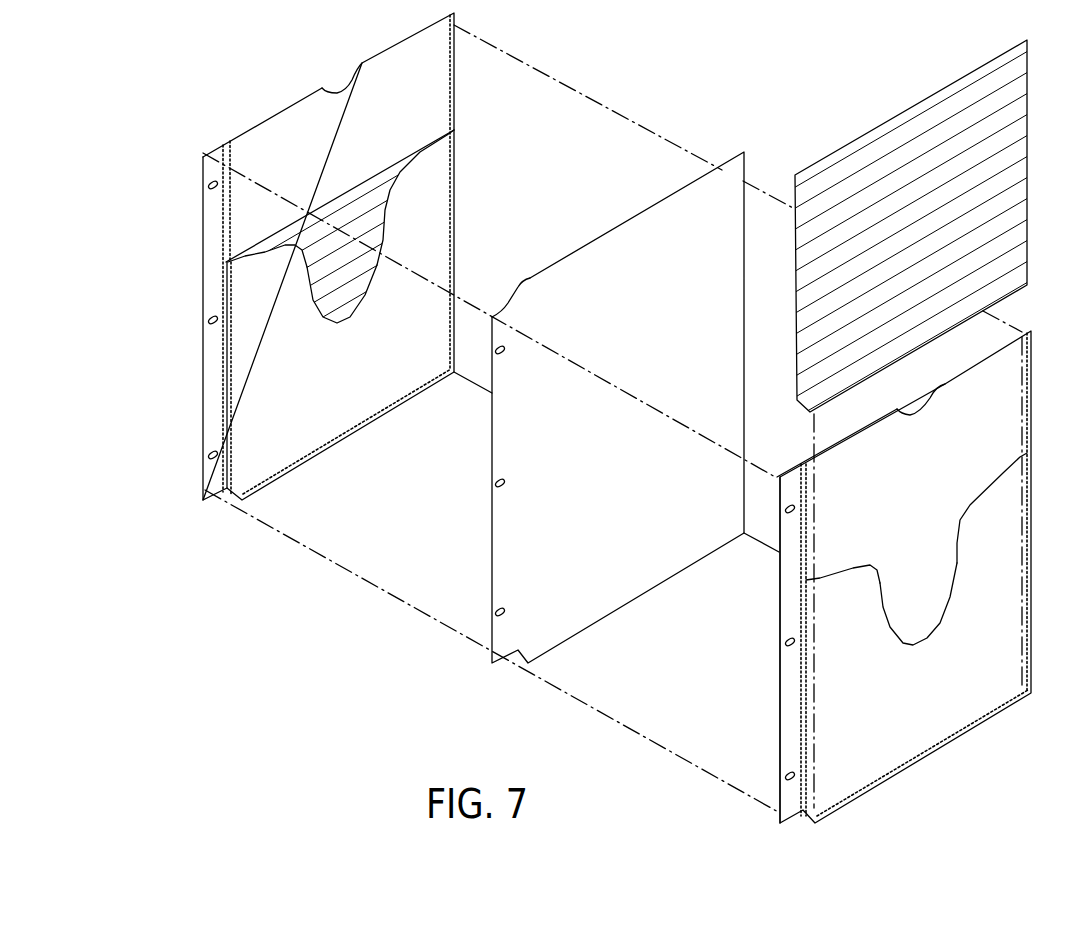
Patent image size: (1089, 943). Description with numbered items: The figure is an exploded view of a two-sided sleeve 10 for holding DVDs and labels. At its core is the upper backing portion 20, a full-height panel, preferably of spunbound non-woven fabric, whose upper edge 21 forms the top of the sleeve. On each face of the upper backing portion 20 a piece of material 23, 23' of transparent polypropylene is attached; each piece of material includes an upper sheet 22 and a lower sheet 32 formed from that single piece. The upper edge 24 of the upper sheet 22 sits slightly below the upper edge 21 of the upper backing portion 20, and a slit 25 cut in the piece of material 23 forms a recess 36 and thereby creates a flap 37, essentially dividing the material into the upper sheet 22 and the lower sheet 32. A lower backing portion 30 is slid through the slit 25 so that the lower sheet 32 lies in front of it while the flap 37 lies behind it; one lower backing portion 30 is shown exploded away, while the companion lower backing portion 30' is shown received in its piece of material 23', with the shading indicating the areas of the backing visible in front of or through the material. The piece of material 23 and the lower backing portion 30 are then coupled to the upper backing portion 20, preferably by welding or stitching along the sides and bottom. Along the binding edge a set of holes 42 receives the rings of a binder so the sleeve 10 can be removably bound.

The sleeve 10 is at (296, 624).
The upper backing portion 20 is at (658, 218).
The upper edge of the upper backing portion 21 is at (570, 250).
The upper sheet 22 is at (398, 60).
The piece of material 23 is at (938, 574).
The piece of material 23' is at (304, 254).
The upper edge of the upper sheet 24 is at (278, 110).
The slit 25 is at (380, 228).
The lower backing portion 30 is at (931, 233).
The lower backing portion 30' is at (335, 269).
The lower sheet 32 is at (245, 405).
The recess 36 is at (955, 540).
The flap 37 is at (330, 305).
The holes 42 is at (206, 186).